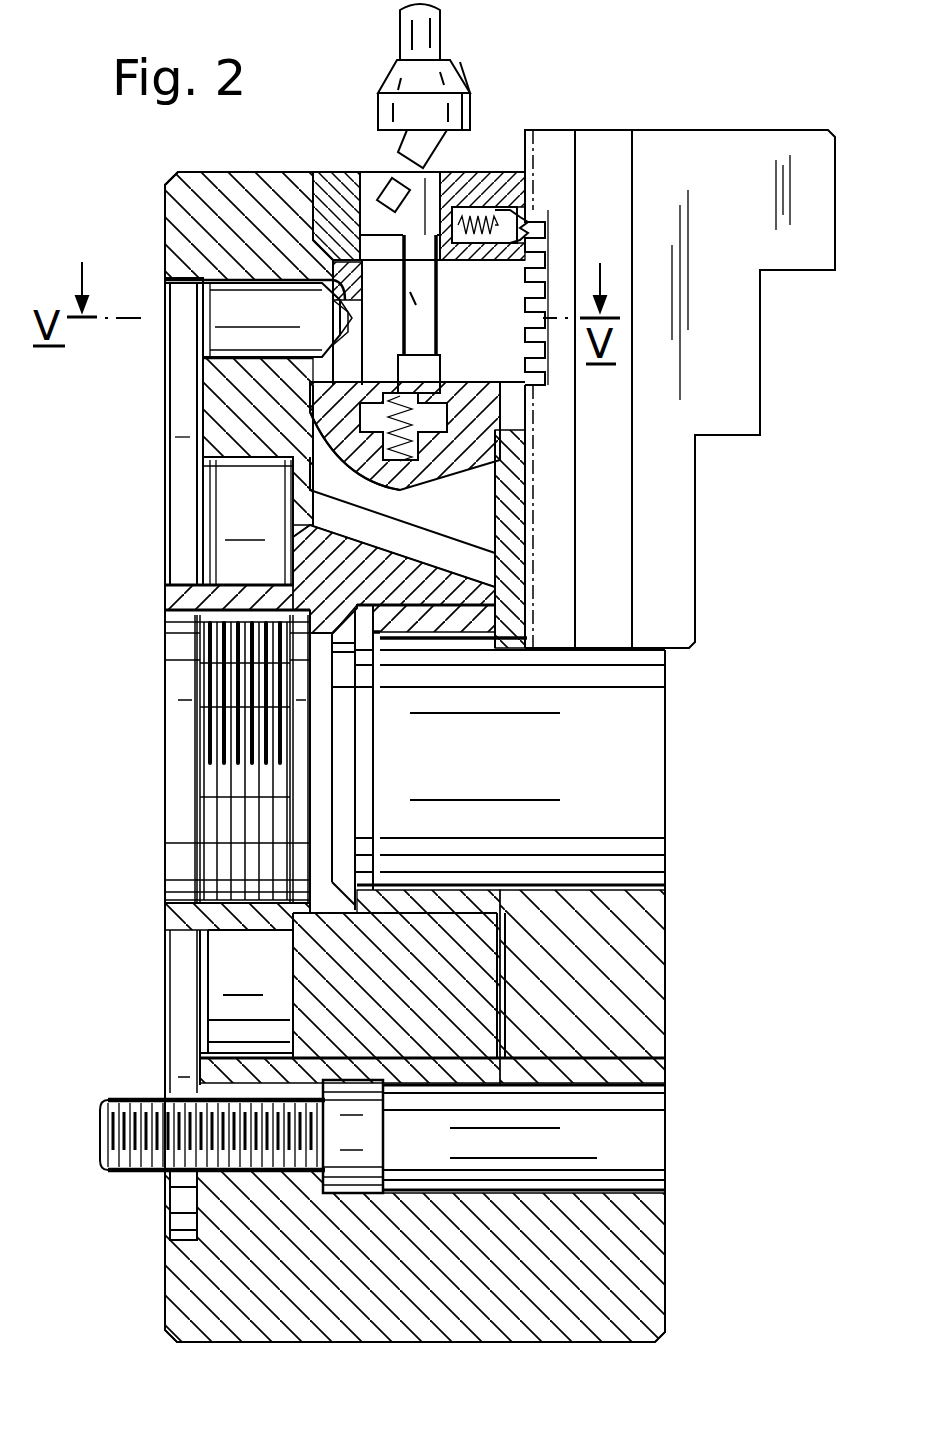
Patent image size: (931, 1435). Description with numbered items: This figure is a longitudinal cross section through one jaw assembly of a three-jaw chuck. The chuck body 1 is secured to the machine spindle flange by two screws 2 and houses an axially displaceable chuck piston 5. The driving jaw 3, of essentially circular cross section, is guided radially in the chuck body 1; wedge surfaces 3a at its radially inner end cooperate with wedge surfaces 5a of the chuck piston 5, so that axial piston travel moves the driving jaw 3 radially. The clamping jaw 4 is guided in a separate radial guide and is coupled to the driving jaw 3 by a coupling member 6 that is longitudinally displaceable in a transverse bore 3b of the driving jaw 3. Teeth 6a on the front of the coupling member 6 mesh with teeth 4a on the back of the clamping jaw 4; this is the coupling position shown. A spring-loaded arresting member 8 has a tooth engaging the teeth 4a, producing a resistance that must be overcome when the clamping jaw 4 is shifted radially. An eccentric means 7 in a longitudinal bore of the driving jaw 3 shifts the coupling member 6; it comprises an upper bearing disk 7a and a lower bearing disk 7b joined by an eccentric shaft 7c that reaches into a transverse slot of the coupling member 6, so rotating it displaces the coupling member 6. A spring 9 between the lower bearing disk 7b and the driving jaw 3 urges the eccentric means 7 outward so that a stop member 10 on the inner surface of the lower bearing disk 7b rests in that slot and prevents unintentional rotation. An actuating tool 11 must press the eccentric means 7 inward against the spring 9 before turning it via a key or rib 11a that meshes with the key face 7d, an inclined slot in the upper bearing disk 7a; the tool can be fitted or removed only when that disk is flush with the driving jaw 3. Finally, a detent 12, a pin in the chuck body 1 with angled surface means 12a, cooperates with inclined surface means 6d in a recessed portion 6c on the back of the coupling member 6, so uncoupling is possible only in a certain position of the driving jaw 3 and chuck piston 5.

The chuck body 1 is at (640, 987).
The screws 2 is at (128, 1105).
The driving jaw 3 is at (330, 180).
The wedge surfaces 3a is at (425, 530).
The transverse bore 3b is at (514, 380).
The clamping jaw 4 is at (684, 148).
The set of teeth 4a is at (545, 250).
The chuck piston 5 is at (335, 585).
The wedge surfaces 5a is at (293, 470).
The coupling member 6 is at (484, 320).
The set of teeth 6a is at (548, 280).
The recessed portion 6c is at (350, 327).
The inclined surface means 6d is at (310, 357).
The eccentric means 7 is at (300, 195).
The upper bearing disk 7a is at (398, 210).
The lower bearing disk 7b is at (360, 425).
The shaft 7c is at (412, 300).
The key face 7d is at (402, 195).
The arresting member 8 is at (508, 220).
The spring 9 is at (395, 465).
The stop member 10 is at (445, 375).
The actuating tool 11 is at (415, 75).
The key or rib 11a is at (408, 147).
The detent 12 is at (240, 343).
The angled surface means 12a is at (295, 283).